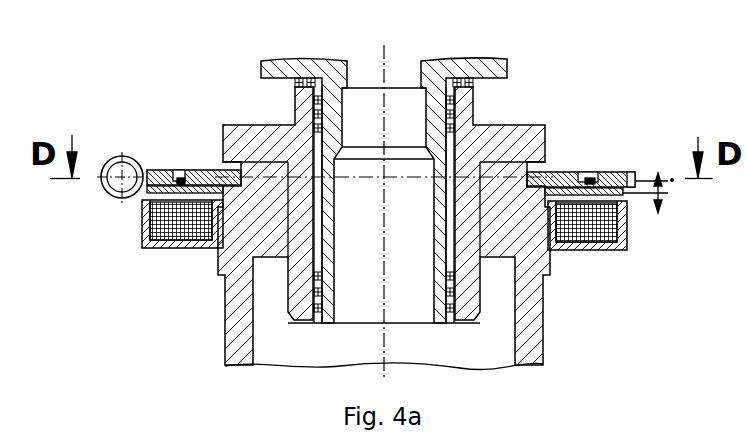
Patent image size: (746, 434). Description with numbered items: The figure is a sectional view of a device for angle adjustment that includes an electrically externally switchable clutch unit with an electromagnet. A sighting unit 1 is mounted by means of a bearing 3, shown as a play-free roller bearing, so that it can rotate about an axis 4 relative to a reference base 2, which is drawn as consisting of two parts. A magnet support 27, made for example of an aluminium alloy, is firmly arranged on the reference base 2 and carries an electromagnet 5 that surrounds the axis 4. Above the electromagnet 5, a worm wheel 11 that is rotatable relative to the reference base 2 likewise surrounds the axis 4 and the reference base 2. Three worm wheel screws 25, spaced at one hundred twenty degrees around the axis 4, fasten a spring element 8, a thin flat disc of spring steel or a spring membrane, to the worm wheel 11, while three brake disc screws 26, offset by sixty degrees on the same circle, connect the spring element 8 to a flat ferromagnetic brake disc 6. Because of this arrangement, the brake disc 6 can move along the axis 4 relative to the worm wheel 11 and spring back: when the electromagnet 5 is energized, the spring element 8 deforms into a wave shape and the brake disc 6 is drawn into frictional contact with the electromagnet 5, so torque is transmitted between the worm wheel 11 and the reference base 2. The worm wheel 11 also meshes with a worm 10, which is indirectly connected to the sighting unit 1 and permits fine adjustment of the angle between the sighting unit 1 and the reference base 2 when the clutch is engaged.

The sighting unit 1 is at (500, 58).
The reference base 2 is at (527, 343).
The bearing 3 is at (317, 322).
The axis 4 is at (385, 60).
The electromagnet 5 is at (603, 237).
The brake disc 6 is at (148, 200).
The spring element 8 is at (160, 170).
The worm 10 is at (122, 156).
The worm wheel 11 is at (200, 170).
The worm wheel screws 25 is at (182, 170).
The brake disc screws 26 is at (592, 182).
The magnet support 27 is at (565, 245).